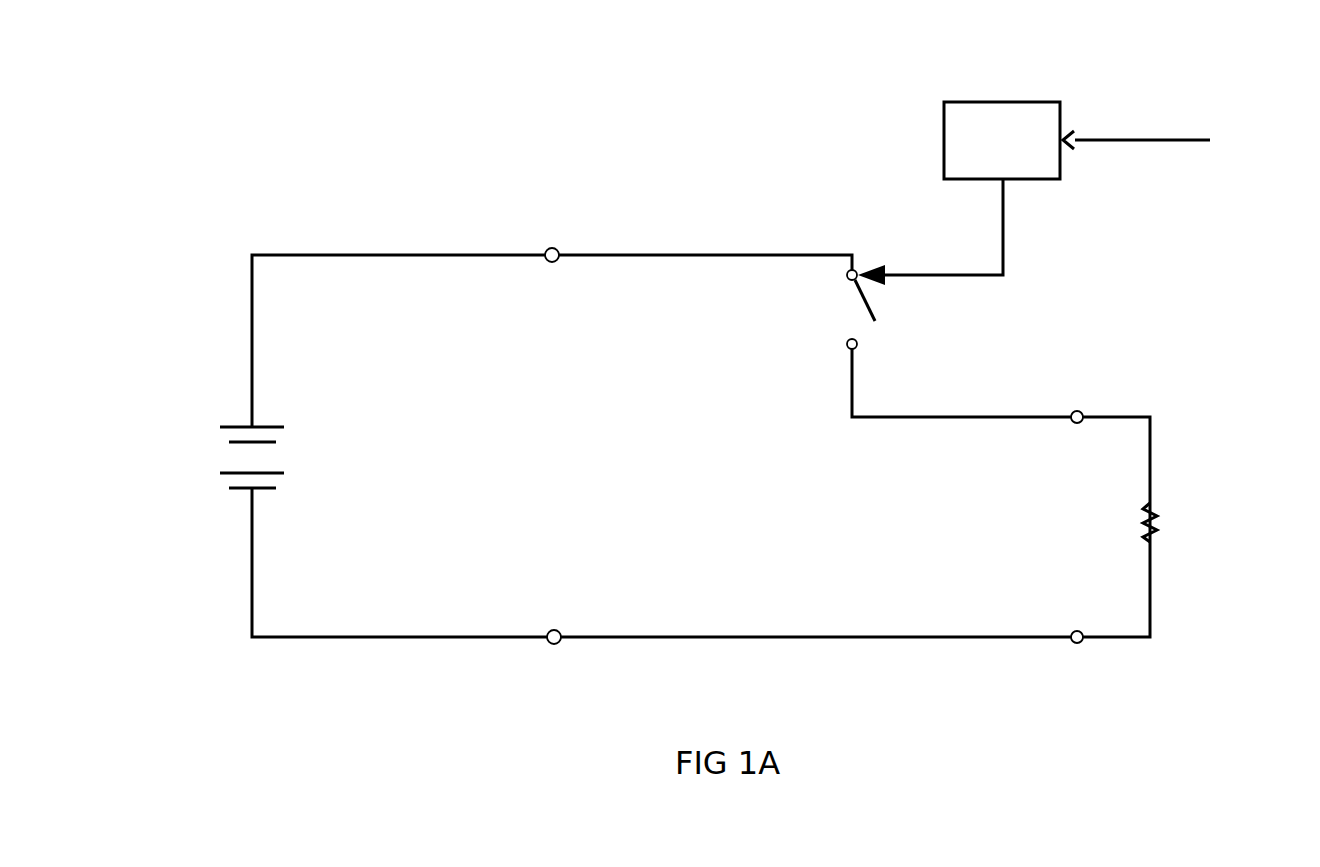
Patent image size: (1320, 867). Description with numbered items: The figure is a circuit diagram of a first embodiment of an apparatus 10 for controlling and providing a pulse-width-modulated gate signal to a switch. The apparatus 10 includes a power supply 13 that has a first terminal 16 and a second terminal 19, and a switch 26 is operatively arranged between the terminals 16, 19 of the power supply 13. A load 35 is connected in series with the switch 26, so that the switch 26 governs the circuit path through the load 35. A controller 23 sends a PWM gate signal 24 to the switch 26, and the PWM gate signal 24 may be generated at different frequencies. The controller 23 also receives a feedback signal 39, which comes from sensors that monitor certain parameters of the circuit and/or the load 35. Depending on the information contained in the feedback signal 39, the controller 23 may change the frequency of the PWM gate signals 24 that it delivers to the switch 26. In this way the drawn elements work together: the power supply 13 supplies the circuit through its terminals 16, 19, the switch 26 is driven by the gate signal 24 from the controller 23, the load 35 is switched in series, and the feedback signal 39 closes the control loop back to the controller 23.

The apparatus 10 is at (262, 191).
The power supply 13 is at (202, 413).
The first terminal 16 is at (550, 247).
The second terminal 19 is at (550, 645).
The controller 23 is at (1050, 100).
The PWM gate signal 24 is at (1005, 231).
The switch 26 is at (866, 301).
The load 35 is at (1162, 518).
The feedback signal 39 is at (1165, 142).